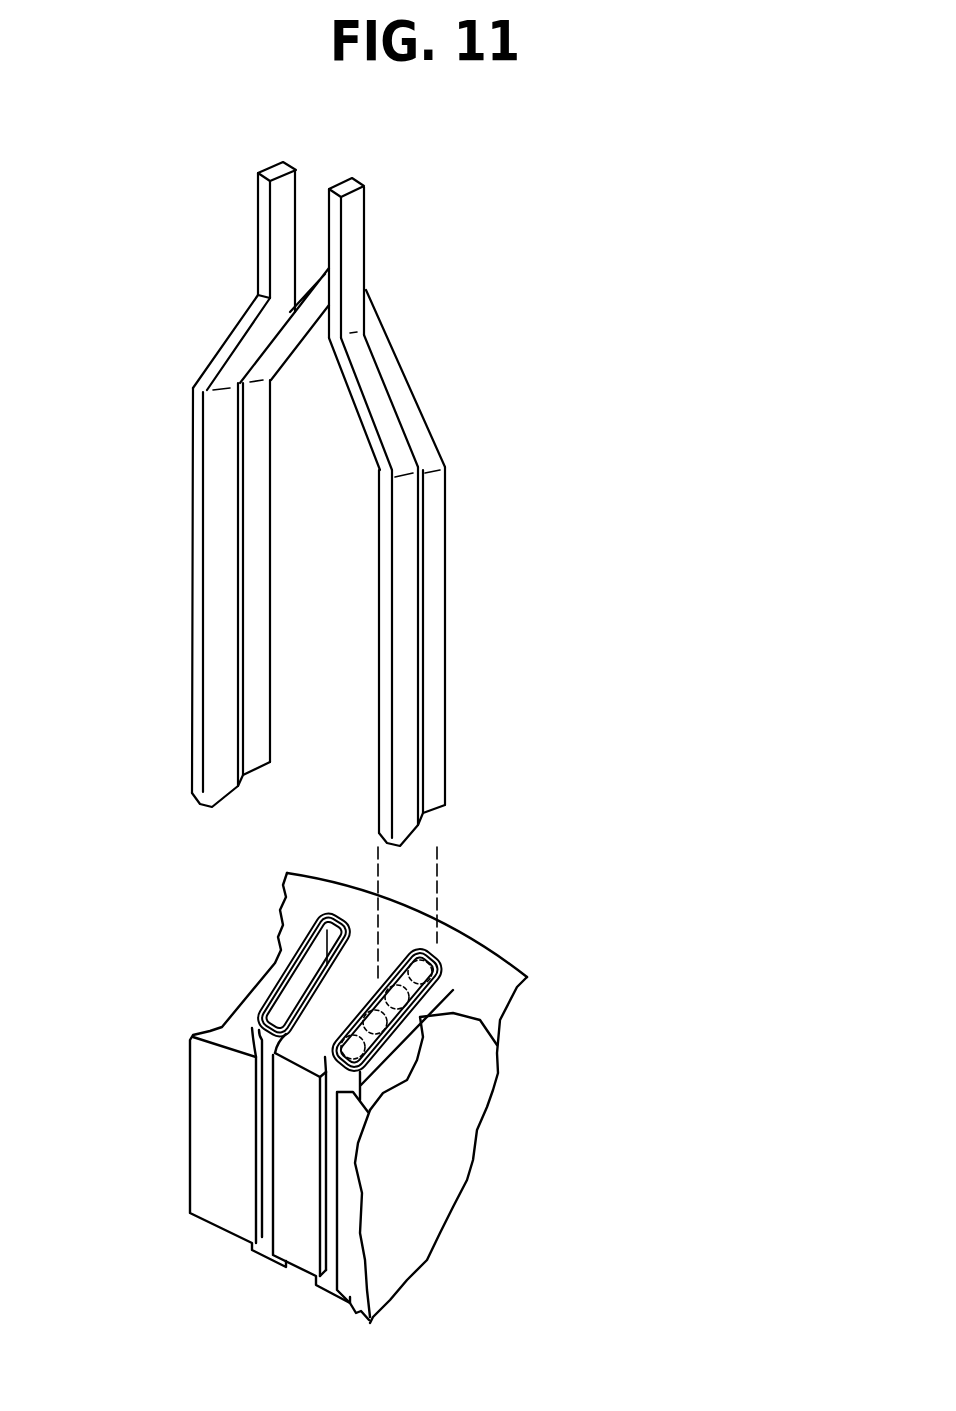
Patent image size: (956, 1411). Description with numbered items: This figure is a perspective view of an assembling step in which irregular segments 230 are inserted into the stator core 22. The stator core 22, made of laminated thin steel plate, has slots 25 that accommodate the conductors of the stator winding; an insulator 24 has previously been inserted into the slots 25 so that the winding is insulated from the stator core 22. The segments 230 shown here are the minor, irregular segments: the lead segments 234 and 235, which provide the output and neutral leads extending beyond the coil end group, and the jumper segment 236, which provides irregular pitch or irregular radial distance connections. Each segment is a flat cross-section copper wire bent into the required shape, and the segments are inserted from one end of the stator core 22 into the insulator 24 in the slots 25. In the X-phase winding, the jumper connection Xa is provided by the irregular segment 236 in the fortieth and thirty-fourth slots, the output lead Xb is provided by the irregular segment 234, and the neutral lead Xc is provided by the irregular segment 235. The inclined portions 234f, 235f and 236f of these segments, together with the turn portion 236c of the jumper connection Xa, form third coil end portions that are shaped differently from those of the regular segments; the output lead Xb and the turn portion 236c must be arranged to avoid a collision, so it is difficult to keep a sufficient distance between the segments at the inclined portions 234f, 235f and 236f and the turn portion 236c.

The segments 230 is at (522, 433).
The lead segment 234 is at (370, 732).
The lead segment 235 is at (177, 675).
The jumper segment 236 is at (455, 577).
The inclined portion 234f is at (373, 438).
The inclined portion 235f is at (222, 347).
The inclined portion 236f is at (418, 408).
The turn portion 236c is at (329, 268).
The jumper connection Xa is at (398, 360).
The output lead Xb is at (358, 243).
The neutral lead Xc is at (266, 200).
The stator core 22 is at (482, 960).
The insulator 24 is at (497, 1058).
The slots 25 is at (273, 1195).